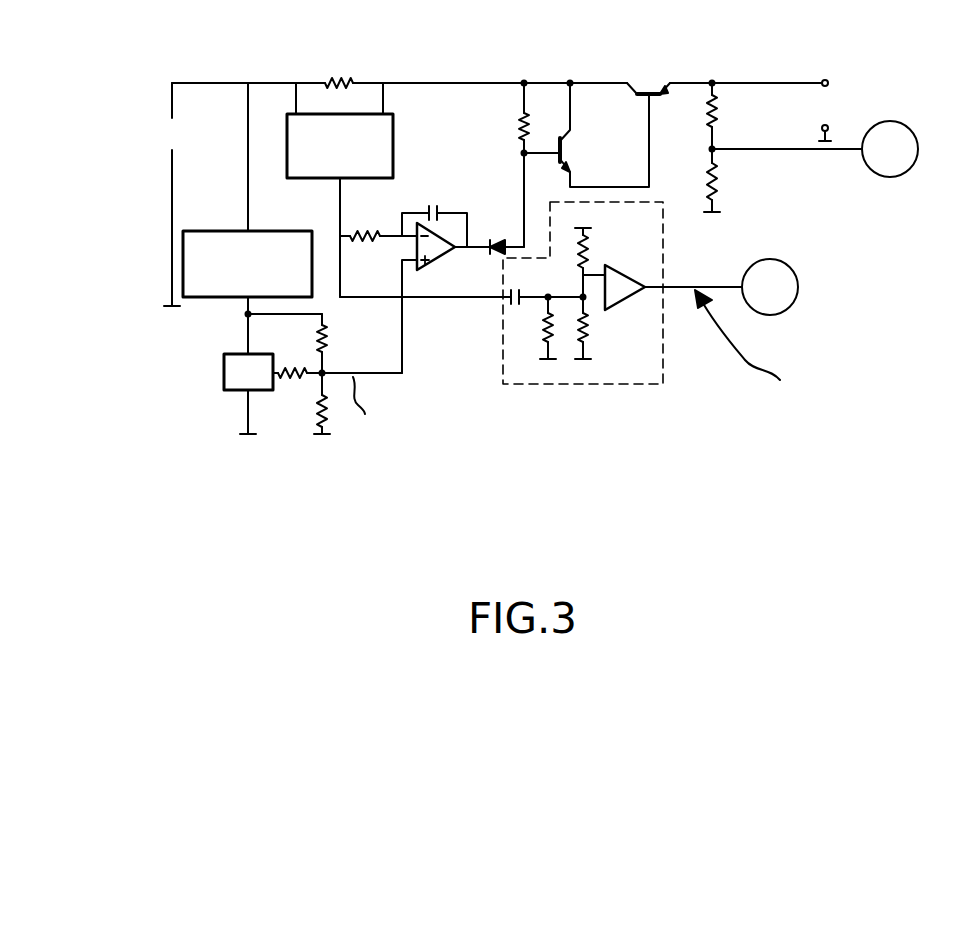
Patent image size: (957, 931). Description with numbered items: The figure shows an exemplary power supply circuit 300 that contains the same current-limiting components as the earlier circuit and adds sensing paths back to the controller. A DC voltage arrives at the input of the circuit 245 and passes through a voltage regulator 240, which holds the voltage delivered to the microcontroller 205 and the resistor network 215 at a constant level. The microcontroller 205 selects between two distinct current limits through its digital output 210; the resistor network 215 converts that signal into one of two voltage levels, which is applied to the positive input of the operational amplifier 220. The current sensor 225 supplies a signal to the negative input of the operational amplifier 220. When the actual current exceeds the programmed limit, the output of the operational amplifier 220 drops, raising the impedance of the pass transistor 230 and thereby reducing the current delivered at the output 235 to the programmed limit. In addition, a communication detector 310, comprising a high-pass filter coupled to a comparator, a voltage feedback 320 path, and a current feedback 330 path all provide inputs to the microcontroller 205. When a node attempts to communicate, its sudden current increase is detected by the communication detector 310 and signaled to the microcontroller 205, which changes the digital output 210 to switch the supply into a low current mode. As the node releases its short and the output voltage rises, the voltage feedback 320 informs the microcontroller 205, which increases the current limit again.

The microcontroller 205 is at (224, 384).
The digital output 210 is at (282, 396).
The resistor network 215 is at (330, 345).
The operational amplifier 220 is at (437, 258).
The current sensor 225 is at (393, 128).
The pass transistor 230 is at (565, 132).
The output 235 is at (830, 80).
The voltage regulator 240 is at (223, 230).
The input of the circuit 245 is at (145, 134).
The circuit 300 is at (702, 491).
The communication detector 310 is at (628, 333).
The voltage feedback 320 is at (845, 207).
The current feedback 330 is at (468, 312).